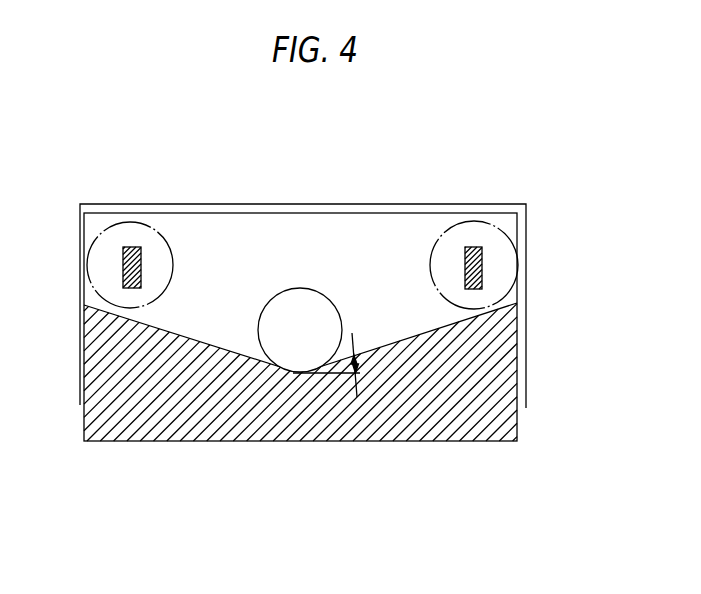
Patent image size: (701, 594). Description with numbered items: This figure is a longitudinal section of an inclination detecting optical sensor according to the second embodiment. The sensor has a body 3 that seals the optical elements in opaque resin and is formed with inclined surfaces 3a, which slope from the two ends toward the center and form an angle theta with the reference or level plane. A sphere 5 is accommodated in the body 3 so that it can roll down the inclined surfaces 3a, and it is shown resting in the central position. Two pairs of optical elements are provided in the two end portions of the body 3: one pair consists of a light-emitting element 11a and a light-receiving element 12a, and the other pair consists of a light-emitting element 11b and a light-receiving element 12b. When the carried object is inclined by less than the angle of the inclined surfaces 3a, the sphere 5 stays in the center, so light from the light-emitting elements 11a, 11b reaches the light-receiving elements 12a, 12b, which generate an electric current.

The body 3 is at (462, 405).
The inclined surface 3a is at (197, 335).
The sphere 5 is at (300, 305).
The light-emitting element 11a is at (110, 219).
The light-receiving element 12a is at (131, 246).
The light-emitting element 11b is at (507, 223).
The light-receiving element 12b is at (478, 246).